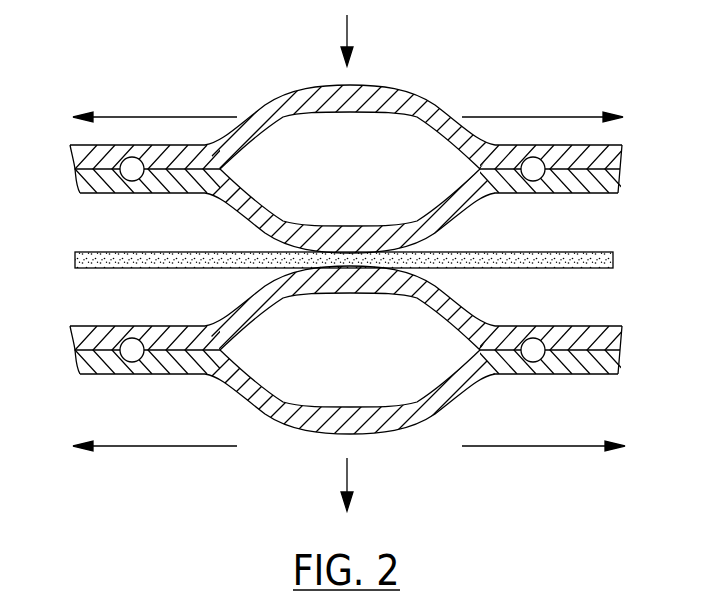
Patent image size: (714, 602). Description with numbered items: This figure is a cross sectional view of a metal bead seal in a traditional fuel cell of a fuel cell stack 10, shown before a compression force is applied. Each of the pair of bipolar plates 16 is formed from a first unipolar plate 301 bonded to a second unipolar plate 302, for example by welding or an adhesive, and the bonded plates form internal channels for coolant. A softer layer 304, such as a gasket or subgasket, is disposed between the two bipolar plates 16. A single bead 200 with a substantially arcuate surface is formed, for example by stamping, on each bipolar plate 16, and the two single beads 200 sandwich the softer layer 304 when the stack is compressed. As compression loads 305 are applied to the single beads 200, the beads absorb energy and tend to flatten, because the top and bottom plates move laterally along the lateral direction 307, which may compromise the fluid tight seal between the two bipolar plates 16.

The fuel cell stack 10 is at (522, 82).
The bipolar plate 16 is at (75, 170).
The single bead 200 is at (263, 112).
The first unipolar plate 301 is at (612, 150).
The second unipolar plate 302 is at (612, 185).
The softer layer 304 is at (612, 255).
The compression loads 305 is at (347, 34).
The lateral direction 307 is at (150, 113).